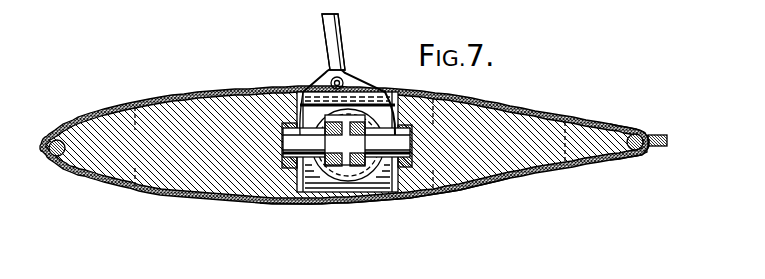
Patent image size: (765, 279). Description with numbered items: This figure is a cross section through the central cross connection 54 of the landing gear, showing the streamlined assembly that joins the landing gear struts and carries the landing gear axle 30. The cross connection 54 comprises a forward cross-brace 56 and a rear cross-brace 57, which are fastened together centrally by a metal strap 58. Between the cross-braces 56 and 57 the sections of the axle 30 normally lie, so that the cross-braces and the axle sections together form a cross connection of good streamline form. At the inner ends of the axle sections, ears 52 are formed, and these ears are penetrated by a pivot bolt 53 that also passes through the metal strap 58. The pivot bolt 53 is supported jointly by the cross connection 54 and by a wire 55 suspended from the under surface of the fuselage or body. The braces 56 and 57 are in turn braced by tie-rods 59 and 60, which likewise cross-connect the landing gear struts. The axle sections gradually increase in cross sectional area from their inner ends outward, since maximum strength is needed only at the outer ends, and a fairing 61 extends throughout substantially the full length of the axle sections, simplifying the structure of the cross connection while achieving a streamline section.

The landing gear axle 30 is at (349, 257).
The ears 52 is at (338, 160).
The pivot bolt 53 is at (420, 186).
The cross connection 54 is at (586, 114).
The wire 55 is at (339, 30).
The forward cross-brace 56 is at (186, 111).
The rear cross-brace 57 is at (504, 114).
The metal strap 58 is at (271, 96).
The tie-rod 59 is at (50, 164).
The tie-rod 60 is at (647, 134).
The fairing 61 is at (310, 180).